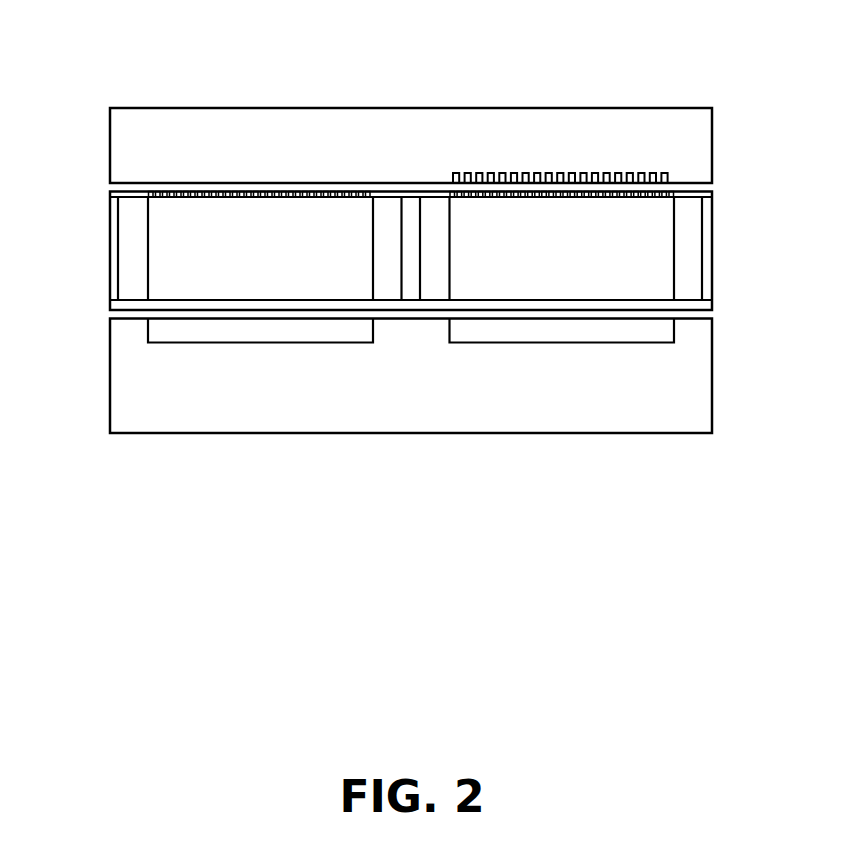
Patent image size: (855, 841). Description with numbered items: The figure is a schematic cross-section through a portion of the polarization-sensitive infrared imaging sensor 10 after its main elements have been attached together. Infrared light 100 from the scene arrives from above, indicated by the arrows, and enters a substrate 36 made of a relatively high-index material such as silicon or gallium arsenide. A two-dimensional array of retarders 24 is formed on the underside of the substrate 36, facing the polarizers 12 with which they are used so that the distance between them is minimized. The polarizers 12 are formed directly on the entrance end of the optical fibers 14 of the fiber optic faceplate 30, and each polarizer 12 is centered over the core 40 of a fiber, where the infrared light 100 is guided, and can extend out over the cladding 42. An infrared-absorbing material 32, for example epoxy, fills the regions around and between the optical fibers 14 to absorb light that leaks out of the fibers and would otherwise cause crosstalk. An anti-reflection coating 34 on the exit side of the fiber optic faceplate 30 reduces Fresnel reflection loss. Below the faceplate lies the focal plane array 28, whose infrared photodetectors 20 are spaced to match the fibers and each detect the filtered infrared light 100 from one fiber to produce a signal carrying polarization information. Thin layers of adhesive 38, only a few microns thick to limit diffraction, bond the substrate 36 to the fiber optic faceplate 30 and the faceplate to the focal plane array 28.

The polarization-sensitive infrared imaging sensor 10 is at (680, 466).
The polarizer 12 is at (265, 199).
The optical fiber 14 is at (117, 234).
The infrared photodetector 20 is at (262, 344).
The retarder 24 is at (565, 172).
The focal plane array 28 is at (713, 320).
The fiber optic faceplate 30 is at (713, 197).
The infrared-absorbing material 32 is at (113, 275).
The anti-reflection coating 34 is at (110, 305).
The substrate 36 is at (713, 108).
The adhesive 38 is at (713, 188).
The core 40 is at (316, 280).
The cladding 42 is at (388, 239).
The infrared light 100 is at (562, 82).